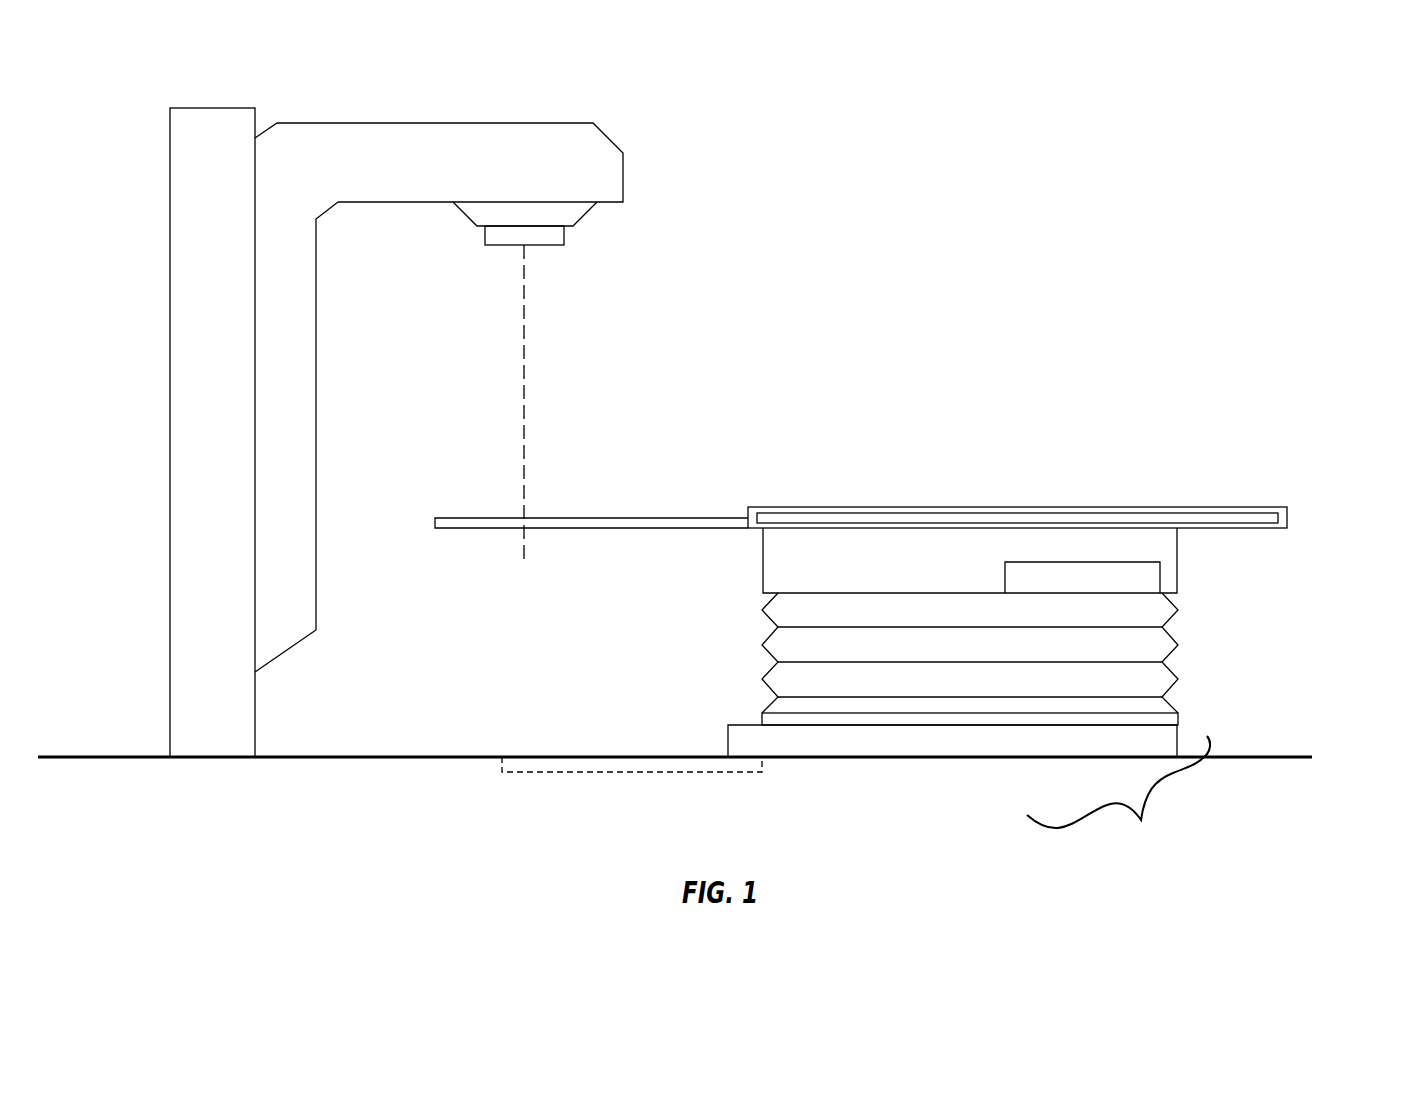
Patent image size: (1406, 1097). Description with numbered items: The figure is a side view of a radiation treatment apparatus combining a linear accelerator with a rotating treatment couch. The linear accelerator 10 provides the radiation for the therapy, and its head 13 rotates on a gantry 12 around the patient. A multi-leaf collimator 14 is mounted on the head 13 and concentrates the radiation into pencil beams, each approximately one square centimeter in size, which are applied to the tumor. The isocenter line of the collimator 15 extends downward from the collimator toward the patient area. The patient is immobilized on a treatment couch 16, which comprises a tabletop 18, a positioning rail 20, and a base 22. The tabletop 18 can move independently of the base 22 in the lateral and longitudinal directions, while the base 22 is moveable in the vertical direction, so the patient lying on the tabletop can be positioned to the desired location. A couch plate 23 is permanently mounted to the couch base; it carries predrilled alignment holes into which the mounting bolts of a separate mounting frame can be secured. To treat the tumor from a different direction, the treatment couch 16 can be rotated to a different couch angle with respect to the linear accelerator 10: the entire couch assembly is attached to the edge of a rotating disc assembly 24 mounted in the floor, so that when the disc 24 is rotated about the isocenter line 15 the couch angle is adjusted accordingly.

The linear accelerator 10 is at (370, 412).
The gantry 12 is at (317, 437).
The head 13 is at (585, 183).
The multi-leaf collimator 14 is at (502, 261).
The isocenter line of the collimator 15 is at (556, 405).
The treatment couch 16 is at (675, 802).
The tabletop 18 is at (593, 491).
The positioning rail 20 is at (1017, 495).
The base 22 is at (935, 675).
The couch plate 23 is at (1137, 578).
The rotating disc assembly 24 is at (640, 791).